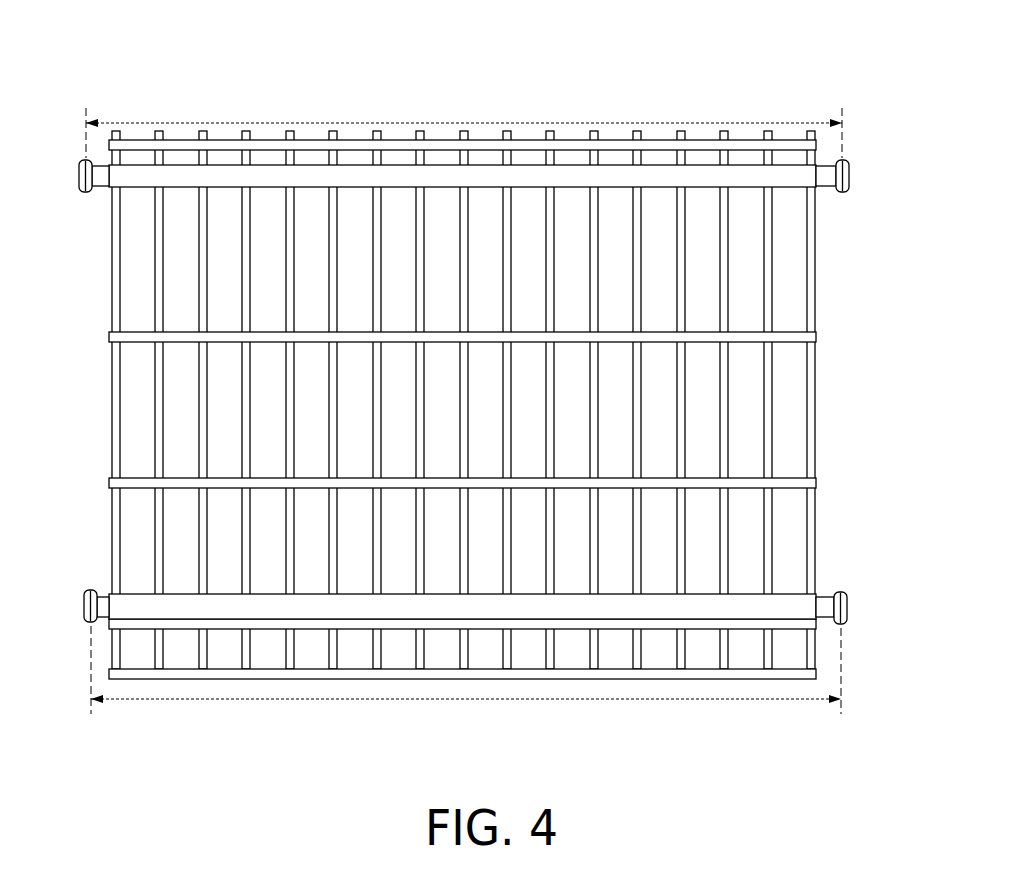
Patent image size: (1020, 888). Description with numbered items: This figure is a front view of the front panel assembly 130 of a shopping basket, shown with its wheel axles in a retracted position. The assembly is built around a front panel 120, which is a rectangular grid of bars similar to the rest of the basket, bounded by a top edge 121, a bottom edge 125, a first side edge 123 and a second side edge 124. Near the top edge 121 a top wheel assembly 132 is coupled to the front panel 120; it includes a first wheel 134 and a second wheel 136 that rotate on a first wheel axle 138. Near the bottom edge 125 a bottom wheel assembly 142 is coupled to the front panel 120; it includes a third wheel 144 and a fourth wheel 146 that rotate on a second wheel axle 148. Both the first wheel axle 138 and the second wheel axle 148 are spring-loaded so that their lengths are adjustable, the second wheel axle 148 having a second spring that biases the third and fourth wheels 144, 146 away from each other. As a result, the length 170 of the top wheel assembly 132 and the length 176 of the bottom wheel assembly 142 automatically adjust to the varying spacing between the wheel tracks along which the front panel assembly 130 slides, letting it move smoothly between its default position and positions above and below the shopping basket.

The front panel 120 is at (467, 410).
The top edge 121 is at (523, 142).
The first side edge 123 is at (115, 430).
The second side edge 124 is at (812, 450).
The bottom edge 125 is at (179, 673).
The front panel assembly 130 is at (473, 135).
The top wheel assembly 132 is at (794, 177).
The first wheel 134 is at (82, 176).
The second wheel 136 is at (848, 178).
The first wheel axle 138 is at (825, 170).
The bottom wheel assembly 142 is at (781, 609).
The third wheel 144 is at (82, 601).
The fourth wheel 146 is at (848, 608).
The second wheel axle 148 is at (827, 604).
The length of top wheel assembly 170 is at (378, 122).
The length of bottom wheel assembly 176 is at (722, 700).